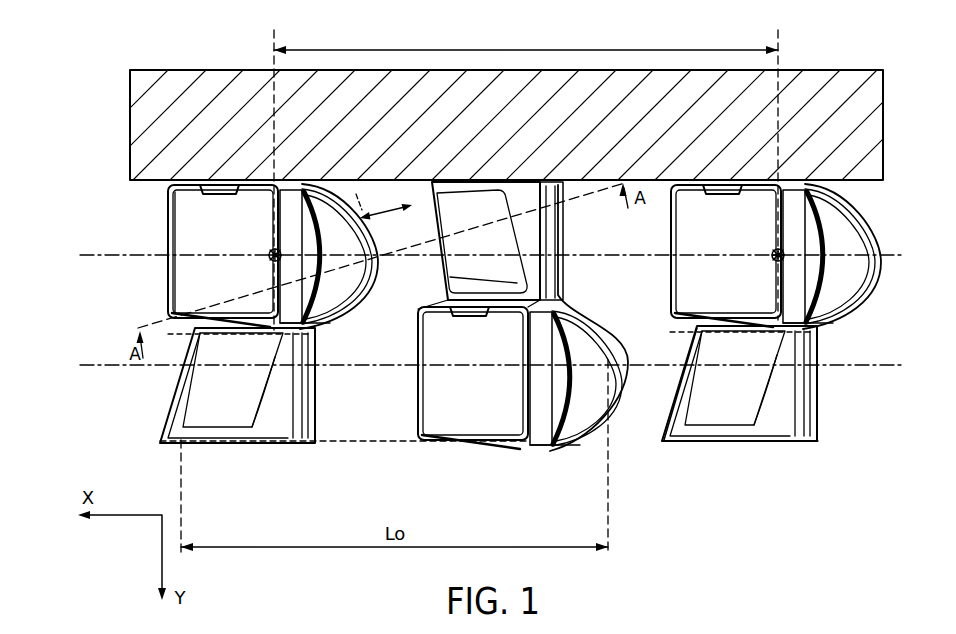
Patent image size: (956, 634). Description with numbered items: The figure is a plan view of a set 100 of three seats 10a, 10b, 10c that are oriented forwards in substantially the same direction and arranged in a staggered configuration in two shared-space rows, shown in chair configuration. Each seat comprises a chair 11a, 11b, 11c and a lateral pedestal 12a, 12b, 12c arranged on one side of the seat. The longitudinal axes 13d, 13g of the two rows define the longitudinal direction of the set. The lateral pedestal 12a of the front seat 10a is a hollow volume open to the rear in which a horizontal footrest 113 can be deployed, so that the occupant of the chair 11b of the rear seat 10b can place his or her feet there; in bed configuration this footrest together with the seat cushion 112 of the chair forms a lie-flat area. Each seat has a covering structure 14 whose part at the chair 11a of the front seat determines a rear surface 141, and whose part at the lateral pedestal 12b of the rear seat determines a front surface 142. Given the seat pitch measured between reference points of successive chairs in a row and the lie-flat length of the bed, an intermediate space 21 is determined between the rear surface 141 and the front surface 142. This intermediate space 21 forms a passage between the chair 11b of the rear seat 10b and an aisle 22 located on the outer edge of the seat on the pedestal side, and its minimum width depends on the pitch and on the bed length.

The set of seats 100 is at (92, 185).
The aisle 22 is at (198, 138).
The chair of front seat 11a is at (207, 237).
The chair of rear seat 11b is at (460, 405).
The chair of third seat 11c is at (710, 237).
The lateral pedestal of front seat 12a is at (207, 405).
The lateral pedestal of rear seat 12b is at (470, 246).
The lateral pedestal of third seat 12c is at (710, 405).
The front seat 10a is at (308, 368).
The rear seat 10b is at (505, 361).
The third seat 10c is at (758, 362).
The covering structure 14 is at (548, 460).
The intermediate space 21 is at (396, 284).
The seat cushion 112 is at (187, 282).
The footrest 113 is at (330, 409).
The rear surface of covering structure 141 is at (613, 388).
The front surface of covering structure 142 is at (675, 382).
The longitudinal axis of first row 13d is at (897, 250).
The longitudinal axis of second row 13g is at (880, 372).